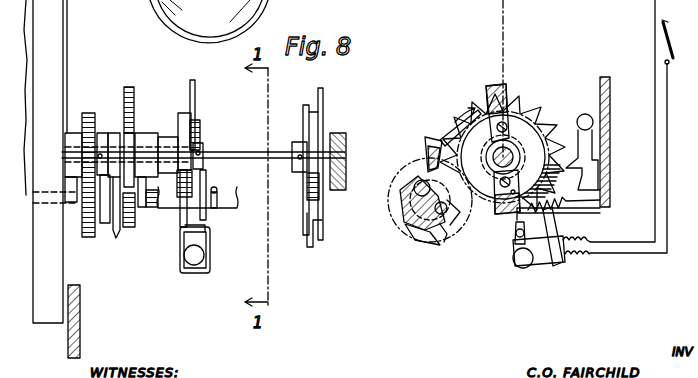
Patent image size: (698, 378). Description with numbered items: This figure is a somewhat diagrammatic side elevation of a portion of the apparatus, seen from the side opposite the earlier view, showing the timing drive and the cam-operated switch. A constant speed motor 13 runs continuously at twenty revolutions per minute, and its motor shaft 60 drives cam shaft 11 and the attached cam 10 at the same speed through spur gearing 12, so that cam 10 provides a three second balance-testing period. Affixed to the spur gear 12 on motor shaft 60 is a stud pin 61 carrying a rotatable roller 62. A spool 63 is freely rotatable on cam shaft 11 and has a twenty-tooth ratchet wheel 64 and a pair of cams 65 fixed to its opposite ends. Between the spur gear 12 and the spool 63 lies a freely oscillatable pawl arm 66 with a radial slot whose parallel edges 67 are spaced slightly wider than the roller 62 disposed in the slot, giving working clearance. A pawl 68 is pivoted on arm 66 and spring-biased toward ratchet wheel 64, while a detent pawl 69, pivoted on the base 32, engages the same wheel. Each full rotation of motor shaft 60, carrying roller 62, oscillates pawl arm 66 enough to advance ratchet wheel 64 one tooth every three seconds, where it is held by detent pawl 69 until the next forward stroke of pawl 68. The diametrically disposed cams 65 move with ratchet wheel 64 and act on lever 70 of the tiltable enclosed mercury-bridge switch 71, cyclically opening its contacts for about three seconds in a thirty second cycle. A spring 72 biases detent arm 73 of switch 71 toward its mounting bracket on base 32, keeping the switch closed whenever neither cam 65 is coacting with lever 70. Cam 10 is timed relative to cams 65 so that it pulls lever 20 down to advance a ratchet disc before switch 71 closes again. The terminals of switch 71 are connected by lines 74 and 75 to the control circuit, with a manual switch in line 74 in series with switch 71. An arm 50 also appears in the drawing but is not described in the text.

The cam 10 is at (305, 105).
The cam shaft 11 is at (234, 152).
The spur gearing 12 is at (88, 113).
The constant speed motor 13 is at (68, 17).
The lever 20 is at (325, 98).
The base 32 is at (600, 92).
The arm 50 is at (309, 240).
The motor shaft 60 is at (75, 205).
The stud pin 61 is at (452, 224).
The roller 62 is at (122, 196).
The spool 63 is at (169, 155).
The ratchet wheel 64 is at (124, 139).
The cams 65 is at (207, 115).
The pawl arm 66 is at (107, 207).
The parallel edges 67 is at (415, 240).
The pawl 68 is at (155, 159).
The detent pawl 69 is at (588, 162).
The lever 70 is at (177, 231).
The mercury-bridge switch 71 is at (180, 250).
The spring 72 is at (228, 187).
The detent arm 73 is at (220, 204).
The line 74 is at (667, 232).
The line 75 is at (652, 12).